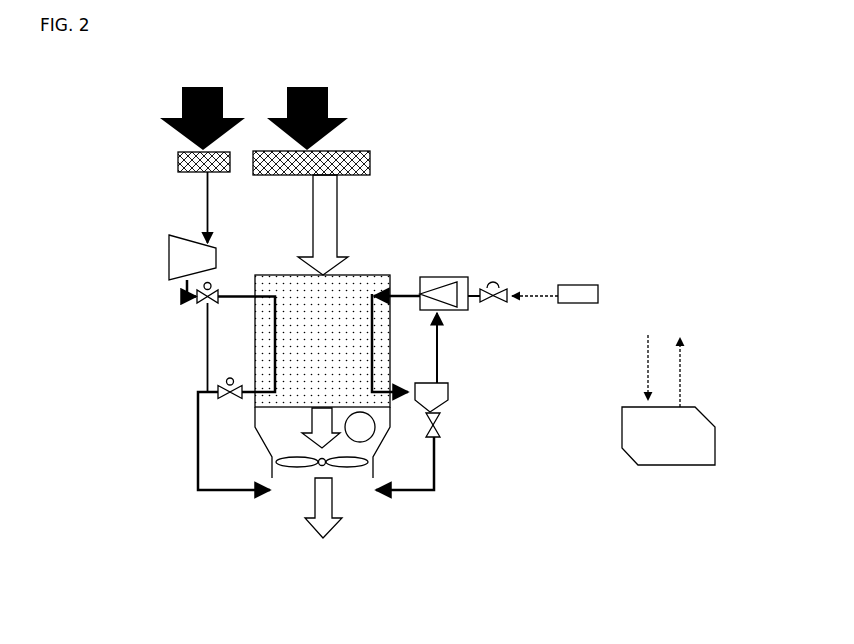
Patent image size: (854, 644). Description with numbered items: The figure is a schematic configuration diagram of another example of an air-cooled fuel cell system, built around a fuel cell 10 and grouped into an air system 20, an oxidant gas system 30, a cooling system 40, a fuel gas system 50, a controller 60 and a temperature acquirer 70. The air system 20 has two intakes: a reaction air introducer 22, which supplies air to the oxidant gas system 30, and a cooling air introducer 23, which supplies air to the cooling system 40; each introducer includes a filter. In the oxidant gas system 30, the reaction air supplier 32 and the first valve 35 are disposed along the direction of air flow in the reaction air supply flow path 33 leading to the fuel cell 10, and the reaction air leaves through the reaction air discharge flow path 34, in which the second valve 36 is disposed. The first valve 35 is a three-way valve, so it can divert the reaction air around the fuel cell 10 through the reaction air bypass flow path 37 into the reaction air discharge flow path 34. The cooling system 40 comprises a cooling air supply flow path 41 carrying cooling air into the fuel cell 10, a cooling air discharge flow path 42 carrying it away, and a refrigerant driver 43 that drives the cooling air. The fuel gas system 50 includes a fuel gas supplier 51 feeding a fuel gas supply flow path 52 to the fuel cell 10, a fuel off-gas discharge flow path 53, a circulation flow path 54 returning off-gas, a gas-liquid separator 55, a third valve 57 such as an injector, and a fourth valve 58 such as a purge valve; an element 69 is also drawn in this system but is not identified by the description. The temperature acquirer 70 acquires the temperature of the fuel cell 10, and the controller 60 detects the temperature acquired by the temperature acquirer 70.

The fuel cell 10 is at (372, 275).
The air system 20 is at (254, 97).
The reaction air introducer 22 is at (177, 162).
The cooling air introducer 23 is at (343, 150).
The oxidant gas system 30 is at (177, 207).
The reaction air supplier 32 is at (169, 257).
The reaction air supply flow path 33 is at (197, 297).
The reaction air discharge flow path 34 is at (197, 427).
The first valve 35 is at (203, 303).
The second valve 36 is at (232, 399).
The reaction air bypass flow path 37 is at (205, 345).
The cooling system 40 is at (380, 189).
The cooling air supply flow path 41 is at (338, 242).
The cooling air discharge flow path 42 is at (312, 500).
The refrigerant driver 43 is at (303, 470).
The fuel gas system 50 is at (542, 280).
The fuel gas supplier 51 is at (598, 283).
The fuel gas supply flow path 52 is at (408, 294).
The fuel off-gas discharge flow path 53 is at (435, 478).
The circulation flow path 54 is at (438, 371).
The gas-liquid separator 55 is at (448, 393).
The third valve 57 is at (484, 286).
The fourth valve 58 is at (434, 426).
The controller 60 is at (707, 417).
The nozzle inlet 69 is at (453, 312).
The temperature acquirer 70 is at (363, 442).